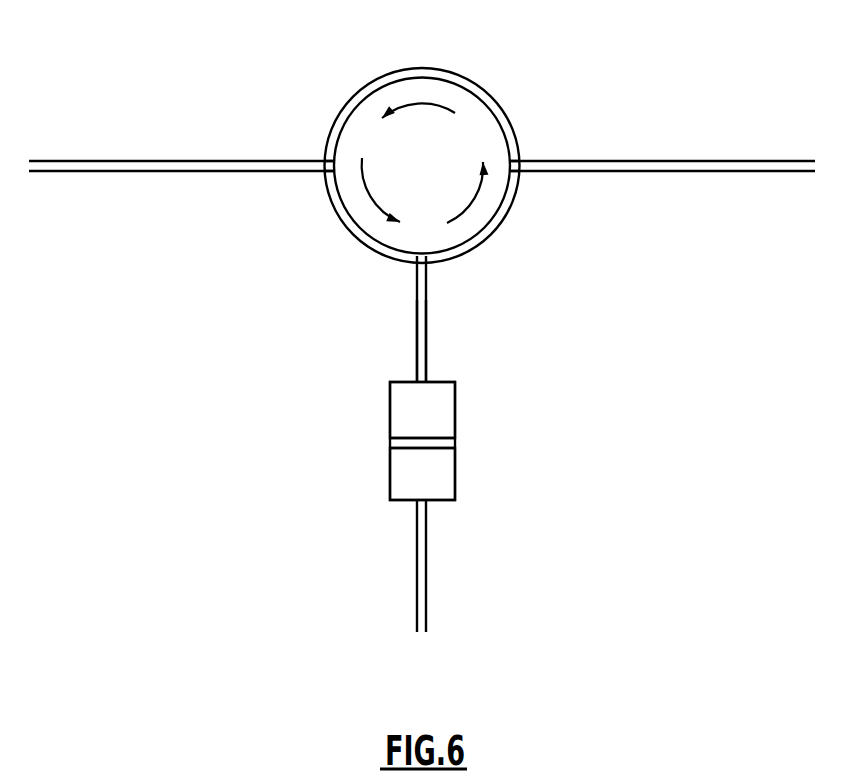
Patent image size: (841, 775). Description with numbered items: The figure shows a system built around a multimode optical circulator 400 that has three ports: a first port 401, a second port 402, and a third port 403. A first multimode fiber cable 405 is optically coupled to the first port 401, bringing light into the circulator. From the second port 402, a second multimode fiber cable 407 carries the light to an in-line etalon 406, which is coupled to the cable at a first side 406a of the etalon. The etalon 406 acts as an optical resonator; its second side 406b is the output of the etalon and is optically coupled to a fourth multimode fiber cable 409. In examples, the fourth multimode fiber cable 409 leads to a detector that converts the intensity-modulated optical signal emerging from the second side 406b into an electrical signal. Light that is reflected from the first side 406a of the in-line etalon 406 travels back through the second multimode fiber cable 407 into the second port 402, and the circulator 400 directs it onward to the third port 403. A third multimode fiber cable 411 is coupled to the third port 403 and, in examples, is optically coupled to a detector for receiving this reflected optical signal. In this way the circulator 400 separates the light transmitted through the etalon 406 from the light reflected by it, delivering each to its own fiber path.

The multimode optical circulator 400 is at (287, 76).
The first port 401 is at (318, 150).
The second port 402 is at (409, 275).
The third port 403 is at (527, 150).
The first multimode fiber cable 405 is at (176, 160).
The in-line etalon 406 is at (370, 450).
The first side 406a is at (443, 378).
The second side 406b is at (405, 503).
The second multimode fiber cable 407 is at (415, 337).
The fourth multimode fiber cable 409 is at (413, 554).
The third multimode fiber cable 411 is at (668, 160).